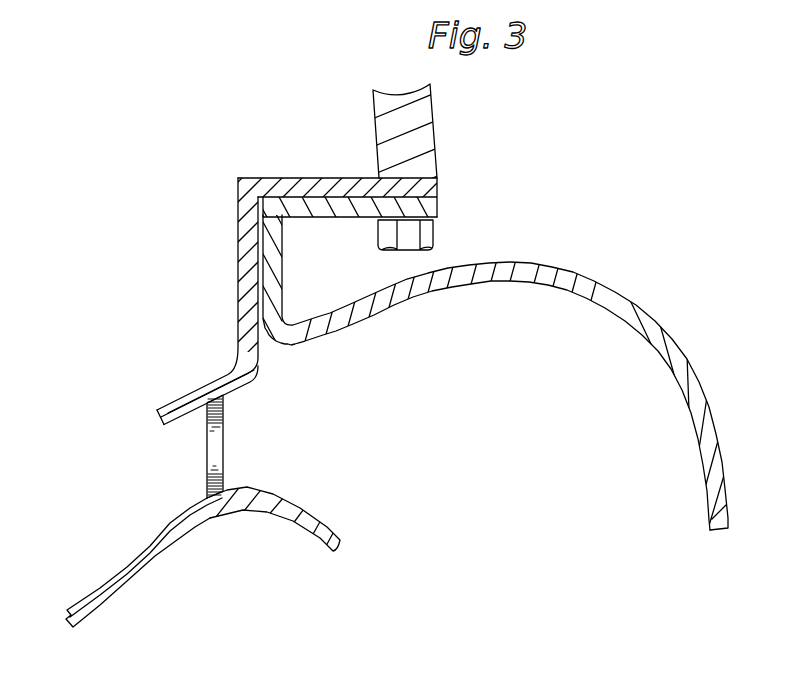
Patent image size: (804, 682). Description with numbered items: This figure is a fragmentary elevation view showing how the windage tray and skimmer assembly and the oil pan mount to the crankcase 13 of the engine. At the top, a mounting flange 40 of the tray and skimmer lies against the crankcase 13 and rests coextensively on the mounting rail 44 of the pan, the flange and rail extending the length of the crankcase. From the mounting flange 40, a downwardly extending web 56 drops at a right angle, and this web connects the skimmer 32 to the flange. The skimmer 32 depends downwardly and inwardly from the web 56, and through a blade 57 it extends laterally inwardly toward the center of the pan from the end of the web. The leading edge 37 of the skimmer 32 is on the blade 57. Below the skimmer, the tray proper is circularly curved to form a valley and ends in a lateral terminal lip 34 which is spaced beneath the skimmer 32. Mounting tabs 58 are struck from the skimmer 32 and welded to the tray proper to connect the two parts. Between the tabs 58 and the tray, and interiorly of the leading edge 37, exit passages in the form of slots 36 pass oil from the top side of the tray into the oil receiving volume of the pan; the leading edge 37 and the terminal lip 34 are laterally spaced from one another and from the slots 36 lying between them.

The crankcase 13 is at (438, 130).
The mounting flange 40 is at (431, 192).
The mounting rail 44 is at (431, 208).
The downwardly extending web 56 is at (239, 230).
The blade 57 is at (202, 387).
The leading edge 37 is at (156, 419).
The mounting tab 58 is at (207, 456).
The exit passage 36 is at (275, 451).
The skimmer 32 is at (184, 396).
The lateral terminal lip 34 is at (290, 493).